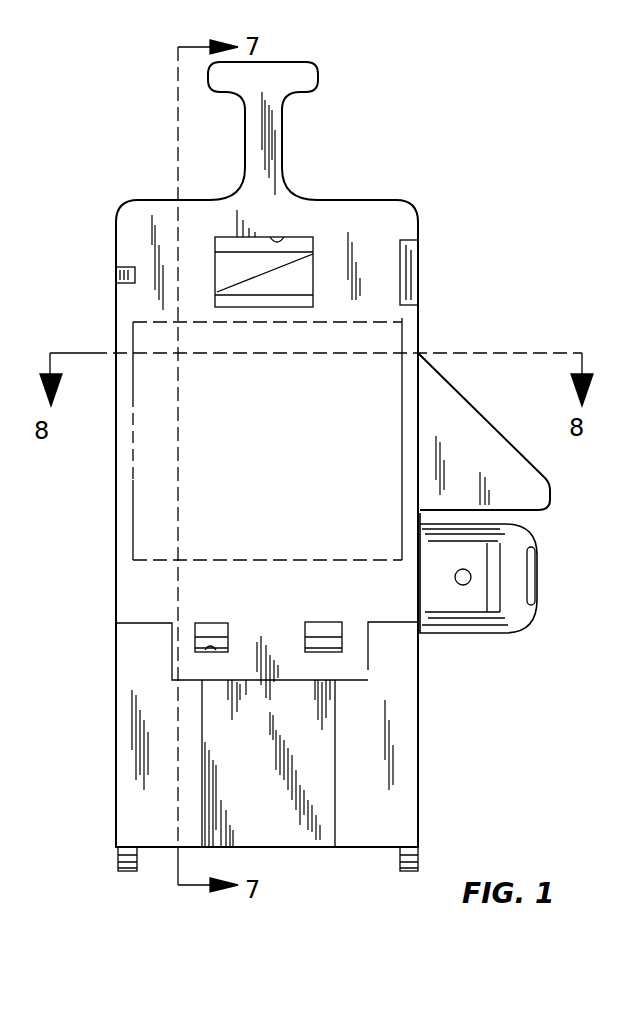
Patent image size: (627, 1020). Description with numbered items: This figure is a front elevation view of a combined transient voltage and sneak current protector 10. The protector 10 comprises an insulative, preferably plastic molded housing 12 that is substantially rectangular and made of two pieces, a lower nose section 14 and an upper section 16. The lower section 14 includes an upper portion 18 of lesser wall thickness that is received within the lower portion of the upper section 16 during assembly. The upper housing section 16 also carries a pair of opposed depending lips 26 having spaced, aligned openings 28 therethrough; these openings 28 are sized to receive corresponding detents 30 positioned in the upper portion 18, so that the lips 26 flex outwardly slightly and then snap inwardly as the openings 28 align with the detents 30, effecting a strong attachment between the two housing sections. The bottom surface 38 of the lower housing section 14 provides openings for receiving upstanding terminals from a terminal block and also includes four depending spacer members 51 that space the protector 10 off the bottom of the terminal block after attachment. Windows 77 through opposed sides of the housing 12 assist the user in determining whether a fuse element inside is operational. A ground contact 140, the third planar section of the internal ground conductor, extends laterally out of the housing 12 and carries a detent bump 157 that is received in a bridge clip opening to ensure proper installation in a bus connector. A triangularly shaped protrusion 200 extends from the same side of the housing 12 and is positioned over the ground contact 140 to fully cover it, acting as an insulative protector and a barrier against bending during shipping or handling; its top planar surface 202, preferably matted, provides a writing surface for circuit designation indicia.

The combined transient voltage and sneak current protector 10 is at (476, 334).
The housing 12 is at (420, 224).
The lower nose section 14 is at (415, 733).
The upper section 16 is at (133, 514).
The upper portion 18 is at (412, 648).
The depending lips 26 is at (355, 668).
The openings 28 is at (207, 655).
The detents 30 is at (220, 630).
The bottom surface 38 is at (300, 848).
The spacer members 51 is at (118, 858).
The windows 77 is at (282, 236).
The ground contact 140 is at (525, 612).
The detent bump 157 is at (468, 571).
The triangularly shaped protrusion 200 is at (458, 402).
The top planar surface 202 is at (485, 419).